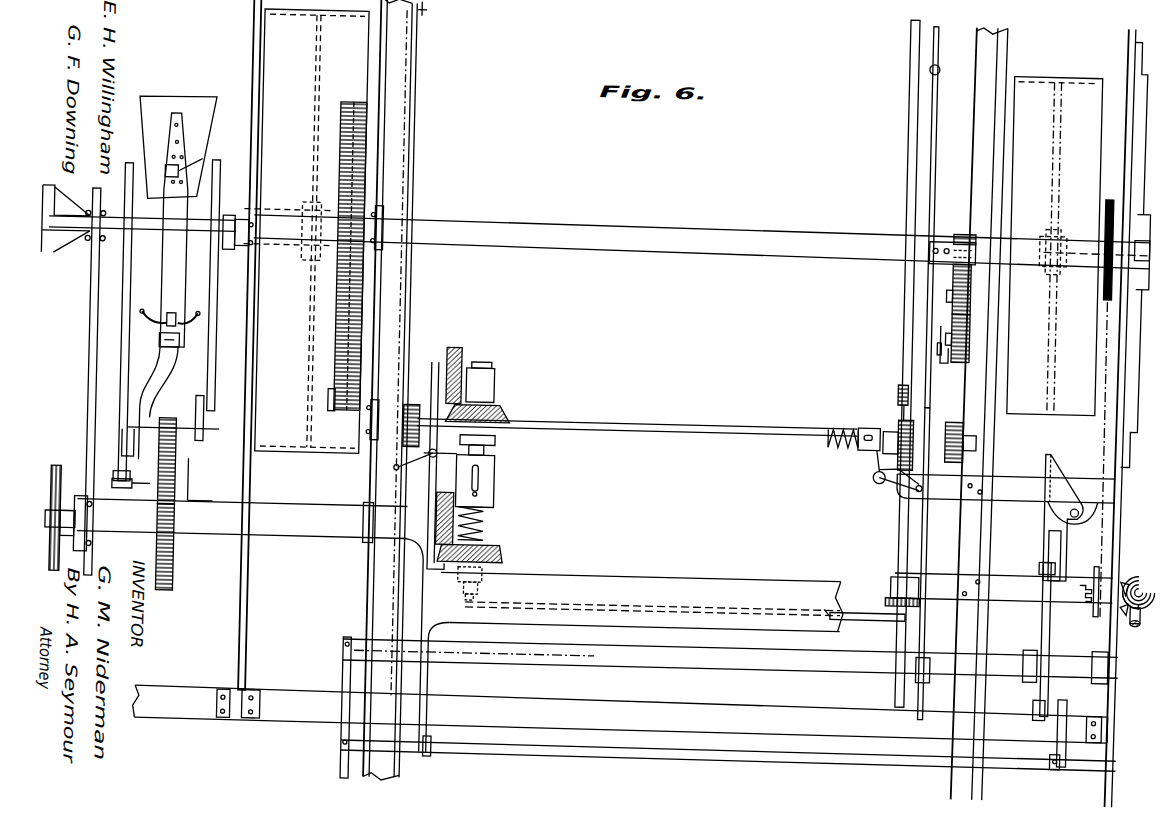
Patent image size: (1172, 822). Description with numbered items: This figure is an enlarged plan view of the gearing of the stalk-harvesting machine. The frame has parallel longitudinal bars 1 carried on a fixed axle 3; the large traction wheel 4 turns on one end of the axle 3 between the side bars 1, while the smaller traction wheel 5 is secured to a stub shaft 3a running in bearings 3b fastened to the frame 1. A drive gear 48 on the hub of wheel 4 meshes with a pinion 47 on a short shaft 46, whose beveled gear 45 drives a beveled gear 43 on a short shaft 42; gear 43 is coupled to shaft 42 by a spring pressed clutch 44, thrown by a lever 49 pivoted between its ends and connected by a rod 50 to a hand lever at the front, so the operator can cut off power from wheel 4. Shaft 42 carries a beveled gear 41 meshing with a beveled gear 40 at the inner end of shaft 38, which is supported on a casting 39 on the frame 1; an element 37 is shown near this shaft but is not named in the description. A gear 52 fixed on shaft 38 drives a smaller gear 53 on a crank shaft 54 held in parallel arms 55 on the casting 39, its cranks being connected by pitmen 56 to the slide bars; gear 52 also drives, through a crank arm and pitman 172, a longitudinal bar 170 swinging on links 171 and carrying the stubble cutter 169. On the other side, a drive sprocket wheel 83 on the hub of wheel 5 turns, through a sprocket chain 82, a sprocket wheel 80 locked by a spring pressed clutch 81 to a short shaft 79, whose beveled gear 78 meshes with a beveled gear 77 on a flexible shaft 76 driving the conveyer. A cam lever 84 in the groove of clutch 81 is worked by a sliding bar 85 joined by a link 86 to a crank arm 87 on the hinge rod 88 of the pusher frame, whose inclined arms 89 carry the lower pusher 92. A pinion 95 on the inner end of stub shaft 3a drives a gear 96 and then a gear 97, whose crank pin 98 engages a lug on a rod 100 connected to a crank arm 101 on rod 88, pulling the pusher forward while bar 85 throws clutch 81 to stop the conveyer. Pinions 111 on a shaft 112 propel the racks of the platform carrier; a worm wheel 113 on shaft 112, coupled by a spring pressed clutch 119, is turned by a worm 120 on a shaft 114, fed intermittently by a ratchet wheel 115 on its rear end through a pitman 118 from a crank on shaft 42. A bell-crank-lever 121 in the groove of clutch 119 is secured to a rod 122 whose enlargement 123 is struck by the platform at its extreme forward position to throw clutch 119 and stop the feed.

The longitudinal bars 1 is at (414, 98).
The fixed axle 3 is at (702, 252).
The stub shaft 3a is at (1042, 230).
The bearings 3b is at (1148, 247).
The traction wheel 4 is at (293, 230).
The traction wheel 5 is at (1055, 246).
The sprocket wheel 37 is at (53, 510).
The shaft 38 is at (90, 531).
The casting 39 is at (242, 520).
The beveled gear 40 is at (480, 500).
The beveled gear 41 is at (506, 560).
The short shaft 42 is at (494, 372).
The beveled gear 43 is at (510, 415).
The spring pressed clutch 44 is at (496, 464).
The beveled gear 45 is at (460, 362).
The short shaft 46 is at (420, 380).
The pinion 47 is at (337, 418).
The drive gear 48 is at (357, 283).
The lever 49 is at (424, 467).
The rod 50 is at (413, 14).
The gear 52 is at (180, 563).
The smaller gear 53 is at (170, 430).
The crank shaft 54 is at (204, 448).
The parallel arms 55 is at (145, 498).
The pitmen 56 is at (218, 350).
The flexible shaft 76 is at (1146, 606).
The beveled gear 77 is at (1127, 613).
The beveled gear 78 is at (1136, 584).
The short shaft 79 is at (1047, 595).
The sprocket wheel 80 is at (1098, 604).
The spring pressed clutch 81 is at (1083, 578).
The sprocket chain 82 is at (1103, 436).
The drive sprocket wheel 83 is at (1100, 202).
The cam lever 84 is at (1052, 539).
The sliding bar 85 is at (1047, 516).
The link 86 is at (1051, 640).
The crank arm 87 is at (1040, 683).
The pivot rod 88 is at (620, 699).
The inclined arms 89 is at (349, 748).
The lower pusher 92 is at (642, 601).
The pinion 95 is at (960, 226).
The gear 96 is at (968, 279).
The gear 97 is at (968, 326).
The crank pin 98 is at (941, 355).
The rod 100 is at (930, 391).
The crank arm 101 is at (942, 679).
The pinions 111 is at (410, 452).
The shaft 112 is at (637, 418).
The worm wheel 113 is at (899, 418).
The shaft 114 is at (902, 186).
The ratchet wheel 115 is at (888, 591).
The pitman 118 is at (876, 614).
The spring pressed clutch 119 is at (859, 440).
The worm 120 is at (890, 480).
The bell-crank-lever 121 is at (875, 472).
The rod 122 is at (930, 156).
The enlargement 123 is at (932, 63).
The cutter 169 is at (200, 128).
The longitudinal bar 170 is at (168, 270).
The links 171 is at (197, 168).
The pitman 172 is at (166, 382).